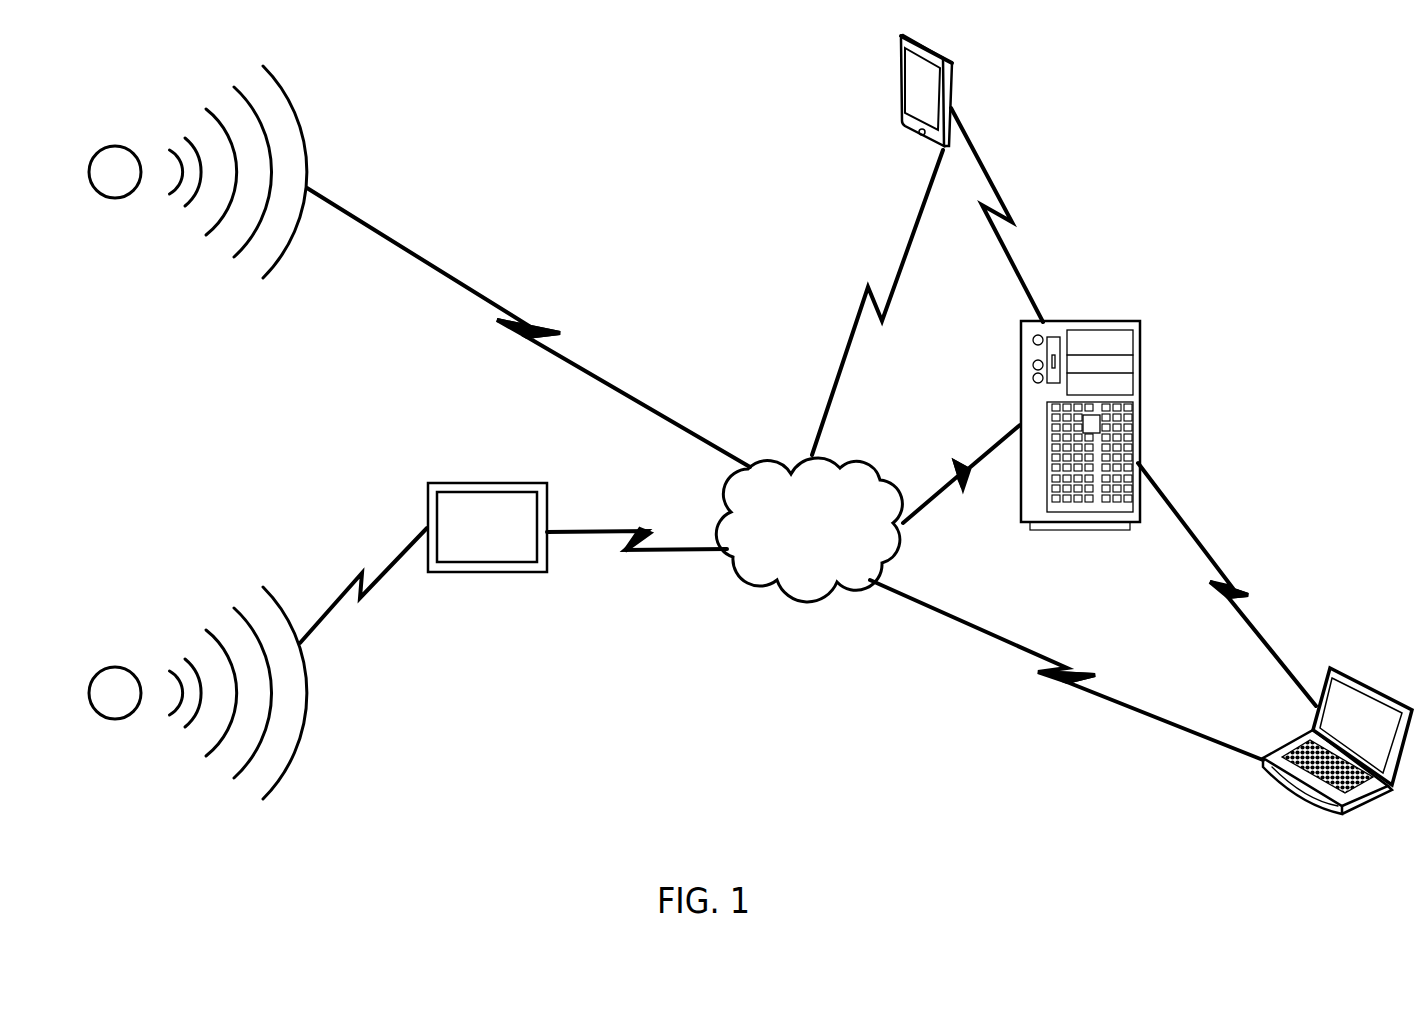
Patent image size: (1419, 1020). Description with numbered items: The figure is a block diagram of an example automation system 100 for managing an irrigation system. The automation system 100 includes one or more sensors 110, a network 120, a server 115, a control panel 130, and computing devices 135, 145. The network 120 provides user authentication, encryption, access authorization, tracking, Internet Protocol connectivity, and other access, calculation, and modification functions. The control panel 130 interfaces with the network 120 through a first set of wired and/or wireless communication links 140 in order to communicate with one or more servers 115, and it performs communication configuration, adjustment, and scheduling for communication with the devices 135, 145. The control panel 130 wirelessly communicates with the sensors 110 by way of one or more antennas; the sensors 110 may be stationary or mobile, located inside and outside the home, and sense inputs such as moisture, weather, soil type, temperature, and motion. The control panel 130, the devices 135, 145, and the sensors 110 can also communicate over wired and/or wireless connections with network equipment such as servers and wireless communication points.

The automation system 100 is at (1072, 822).
The sensors 110 is at (115, 198).
The server 115 is at (1103, 322).
The network 120 is at (833, 460).
The control panel 130 is at (492, 572).
The computing device 135 is at (1300, 800).
The communication links 140 is at (616, 397).
The computing device 145 is at (915, 140).